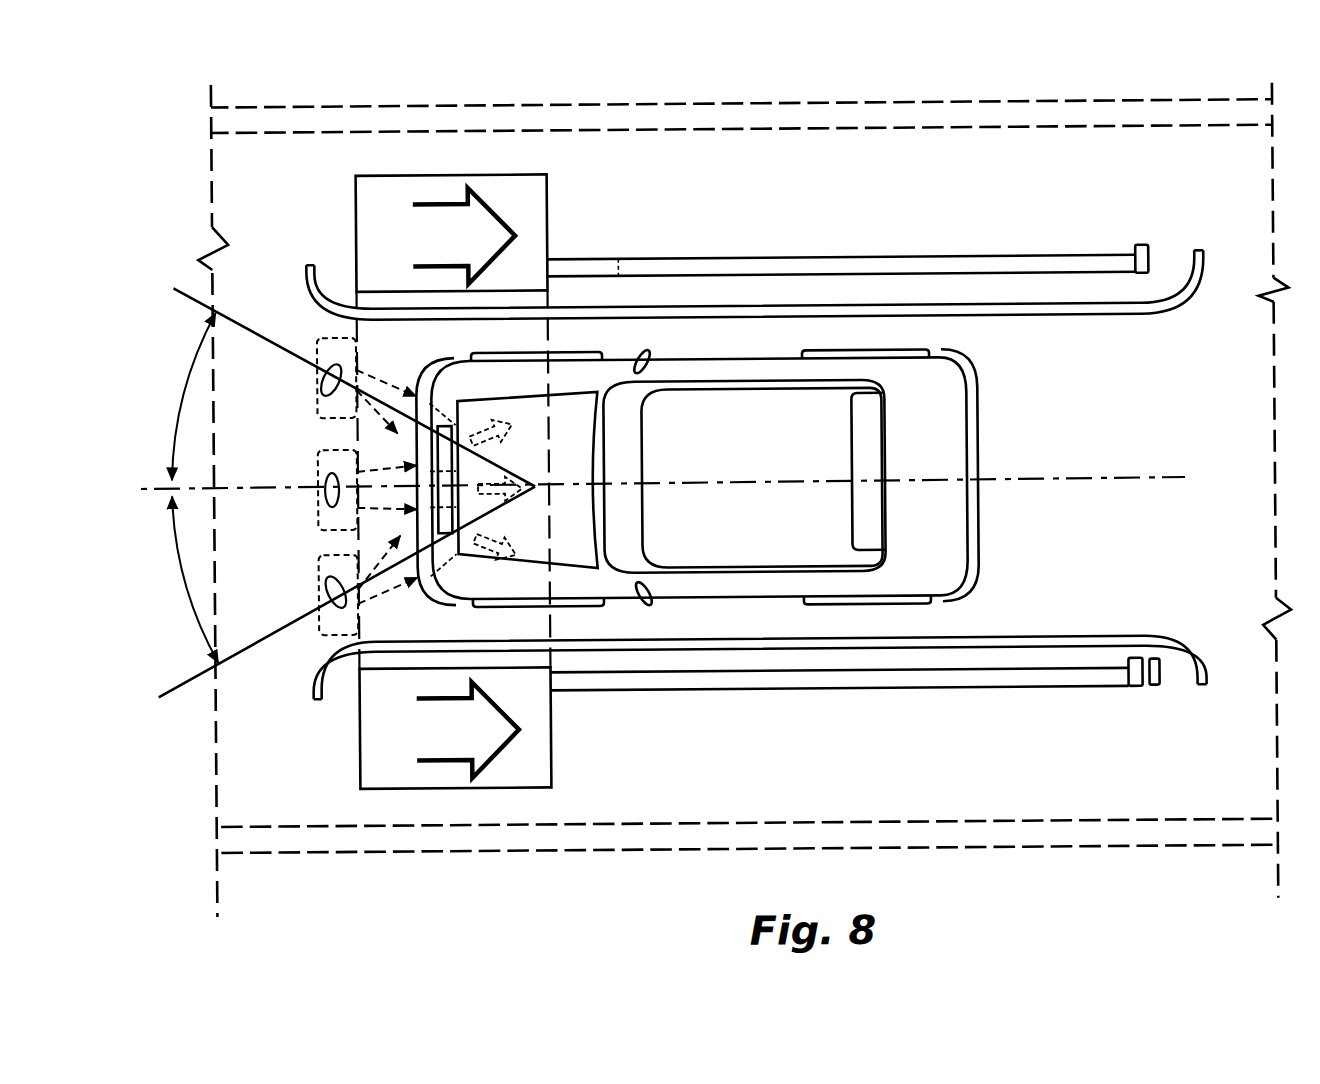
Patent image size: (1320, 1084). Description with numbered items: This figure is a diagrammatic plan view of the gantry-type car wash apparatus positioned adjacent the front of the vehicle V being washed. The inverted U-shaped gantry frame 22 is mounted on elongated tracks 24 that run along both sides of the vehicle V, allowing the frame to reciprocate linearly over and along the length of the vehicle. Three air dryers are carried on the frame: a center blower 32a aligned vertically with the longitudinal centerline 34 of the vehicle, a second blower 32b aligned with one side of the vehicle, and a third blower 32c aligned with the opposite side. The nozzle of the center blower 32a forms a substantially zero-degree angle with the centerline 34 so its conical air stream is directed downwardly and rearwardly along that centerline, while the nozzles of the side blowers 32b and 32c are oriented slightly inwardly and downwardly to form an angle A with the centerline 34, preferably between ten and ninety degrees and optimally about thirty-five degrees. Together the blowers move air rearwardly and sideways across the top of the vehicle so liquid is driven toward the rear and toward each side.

The frame 22 is at (423, 775).
The tracks 24 is at (862, 261).
The center blower 32a is at (320, 450).
The second blower 32b is at (320, 631).
The third blower 32c is at (317, 336).
The longitudinal centerline 34 is at (234, 488).
The vehicle V is at (937, 449).
The angle A is at (192, 488).